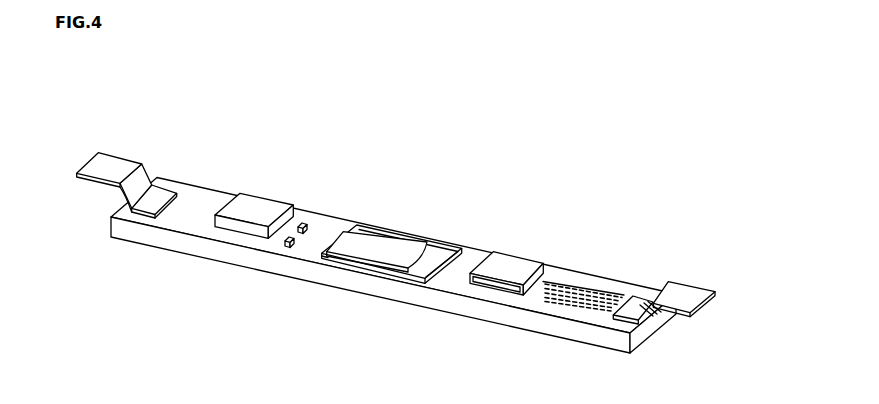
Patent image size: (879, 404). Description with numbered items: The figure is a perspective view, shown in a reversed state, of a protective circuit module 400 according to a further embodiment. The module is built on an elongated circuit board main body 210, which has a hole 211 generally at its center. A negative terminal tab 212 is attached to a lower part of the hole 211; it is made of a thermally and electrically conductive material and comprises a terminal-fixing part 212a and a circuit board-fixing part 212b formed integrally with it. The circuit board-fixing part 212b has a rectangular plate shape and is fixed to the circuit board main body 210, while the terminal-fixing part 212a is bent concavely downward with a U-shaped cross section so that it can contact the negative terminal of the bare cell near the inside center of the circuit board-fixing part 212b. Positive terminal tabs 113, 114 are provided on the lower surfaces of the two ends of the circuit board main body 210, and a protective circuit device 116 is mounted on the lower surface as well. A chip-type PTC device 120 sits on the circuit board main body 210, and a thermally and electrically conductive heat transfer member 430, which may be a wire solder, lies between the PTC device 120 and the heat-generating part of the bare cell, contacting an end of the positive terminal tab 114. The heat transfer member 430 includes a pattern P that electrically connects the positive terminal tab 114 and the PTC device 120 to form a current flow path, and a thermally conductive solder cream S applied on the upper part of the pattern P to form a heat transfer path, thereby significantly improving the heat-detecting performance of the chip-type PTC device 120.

The protective circuit module 400 is at (198, 86).
The circuit board main body 210 is at (458, 284).
The positive terminal tab 113 is at (115, 164).
The protective circuit device 116 is at (258, 208).
The negative terminal tab 212 is at (361, 232).
The terminal-fixing part 212a is at (440, 160).
The circuit board-fixing part 212b is at (438, 257).
The hole 211 is at (324, 248).
The chip-type PTC device 120 is at (527, 265).
The heat transfer member 430 is at (583, 250).
The pattern P is at (590, 290).
The thermally conductive solder cream S is at (613, 297).
The positive terminal tab 114 is at (687, 293).